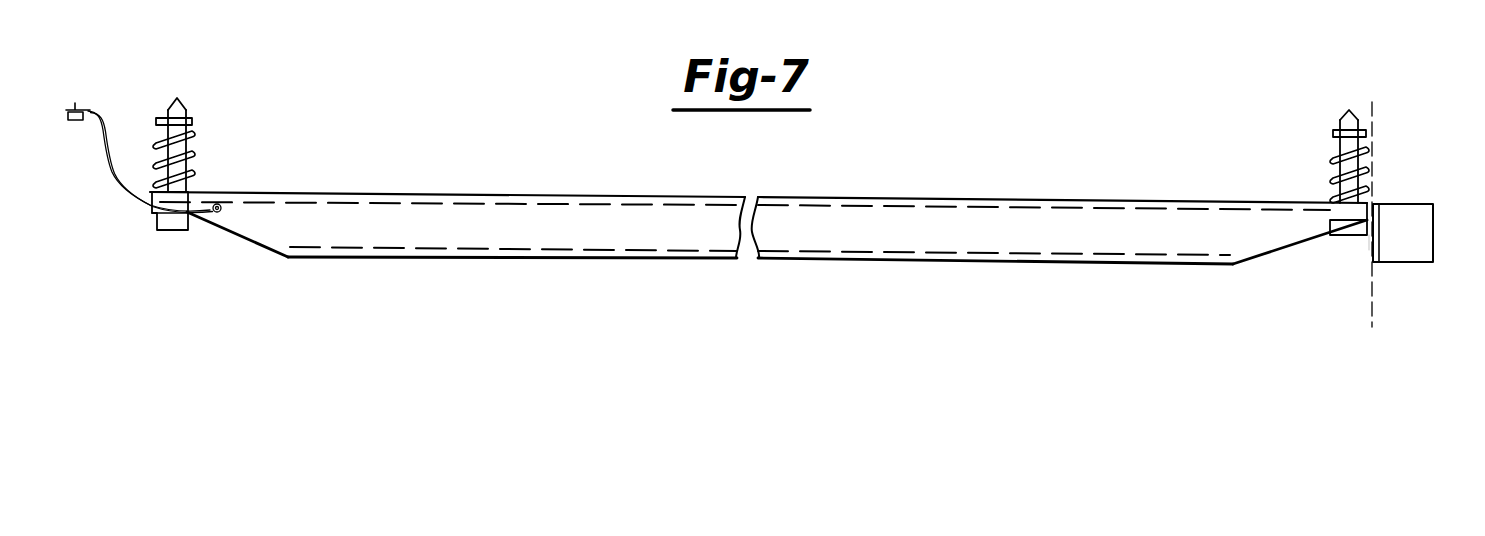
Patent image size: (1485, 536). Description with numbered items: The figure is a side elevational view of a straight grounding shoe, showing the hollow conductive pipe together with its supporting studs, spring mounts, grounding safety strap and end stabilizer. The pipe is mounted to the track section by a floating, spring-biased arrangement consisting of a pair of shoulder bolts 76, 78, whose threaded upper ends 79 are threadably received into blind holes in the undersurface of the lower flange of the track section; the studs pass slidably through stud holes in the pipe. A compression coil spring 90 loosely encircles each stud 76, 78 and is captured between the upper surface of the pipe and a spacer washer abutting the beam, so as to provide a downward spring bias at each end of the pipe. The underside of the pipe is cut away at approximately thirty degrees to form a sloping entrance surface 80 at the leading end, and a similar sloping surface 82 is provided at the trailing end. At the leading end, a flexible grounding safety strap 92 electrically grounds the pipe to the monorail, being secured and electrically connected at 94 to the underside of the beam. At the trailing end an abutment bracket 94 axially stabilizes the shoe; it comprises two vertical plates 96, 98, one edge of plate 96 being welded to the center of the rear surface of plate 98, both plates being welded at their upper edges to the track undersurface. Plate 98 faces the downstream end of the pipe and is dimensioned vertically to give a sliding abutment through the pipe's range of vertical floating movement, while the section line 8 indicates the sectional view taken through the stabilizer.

The shoulder bolt 76 is at (186, 146).
The shoulder bolt 78 is at (1333, 187).
The threaded upper end 79 is at (190, 122).
The sloping entrance surface 80 is at (232, 240).
The sloping surface 82 is at (1295, 247).
The compression coil spring 90 is at (192, 175).
The flexible grounding safety strap 92 is at (118, 198).
The abutment bracket 94 is at (1369, 253).
The plate 96 is at (1401, 214).
The plate 98 is at (1383, 214).
The section line 8- 8 is at (1375, 123).